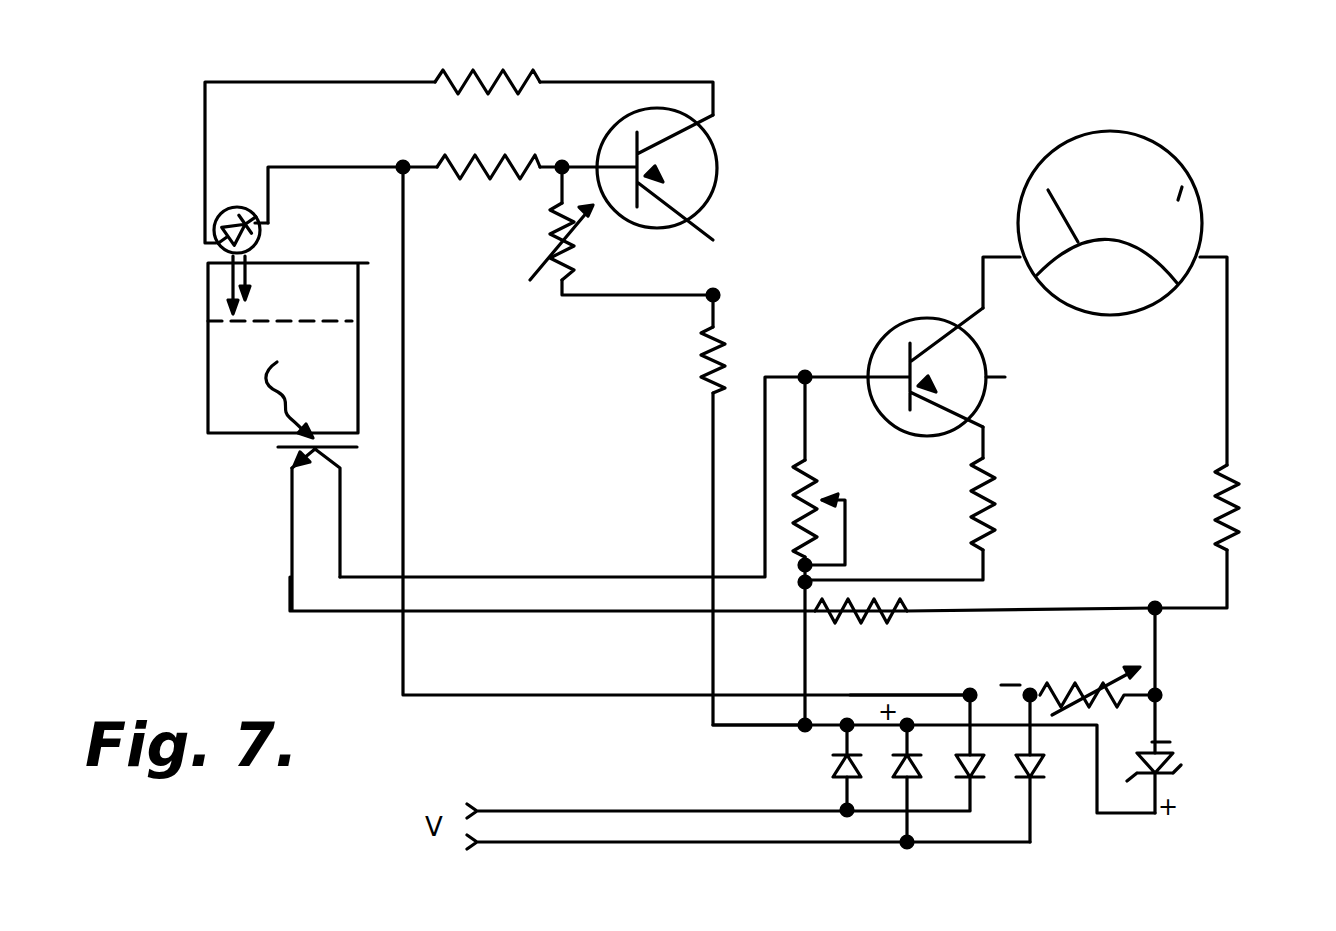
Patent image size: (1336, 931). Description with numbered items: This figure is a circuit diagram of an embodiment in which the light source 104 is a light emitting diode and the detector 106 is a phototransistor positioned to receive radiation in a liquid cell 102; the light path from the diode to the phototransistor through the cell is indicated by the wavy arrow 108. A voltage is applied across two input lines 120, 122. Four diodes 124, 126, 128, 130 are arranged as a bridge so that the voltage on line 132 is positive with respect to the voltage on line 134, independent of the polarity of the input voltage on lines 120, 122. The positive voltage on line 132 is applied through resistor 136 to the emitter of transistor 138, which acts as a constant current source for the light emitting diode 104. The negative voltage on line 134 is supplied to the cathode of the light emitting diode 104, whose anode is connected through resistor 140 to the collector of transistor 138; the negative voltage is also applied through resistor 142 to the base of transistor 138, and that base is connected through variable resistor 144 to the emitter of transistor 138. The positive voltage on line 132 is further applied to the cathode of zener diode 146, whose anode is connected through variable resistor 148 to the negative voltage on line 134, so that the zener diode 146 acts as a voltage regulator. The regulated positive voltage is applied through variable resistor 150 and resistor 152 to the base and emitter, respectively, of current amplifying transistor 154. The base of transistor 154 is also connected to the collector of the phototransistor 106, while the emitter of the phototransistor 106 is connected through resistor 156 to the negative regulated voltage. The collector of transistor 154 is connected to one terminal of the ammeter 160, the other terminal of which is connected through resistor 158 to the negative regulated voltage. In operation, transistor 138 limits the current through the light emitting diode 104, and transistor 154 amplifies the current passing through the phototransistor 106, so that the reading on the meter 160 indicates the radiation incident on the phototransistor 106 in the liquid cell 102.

The liquid cell 102 is at (208, 390).
The light emitting diode source 104 is at (258, 240).
The phototransistor 106 is at (283, 461).
The light path 108 is at (309, 385).
The line 120 is at (680, 810).
The line 122 is at (612, 846).
The diode 124 is at (830, 773).
The diode 126 is at (900, 780).
The diode 128 is at (958, 758).
The diode 130 is at (1046, 768).
The line 132 is at (742, 728).
The line 134 is at (862, 700).
The resistor 136 is at (723, 352).
The transistor 138 is at (717, 165).
The resistor 140 is at (478, 72).
The resistor 142 is at (482, 162).
The variable resistor 144 is at (576, 252).
The zener diode 146 is at (1180, 760).
The variable resistor 148 is at (1088, 668).
The variable resistor 150 is at (812, 485).
The resistor 152 is at (995, 508).
The current amplifying transistor 154 is at (987, 377).
The resistor 156 is at (840, 628).
The resistor 158 is at (1236, 510).
The ammeter 160 is at (1187, 168).